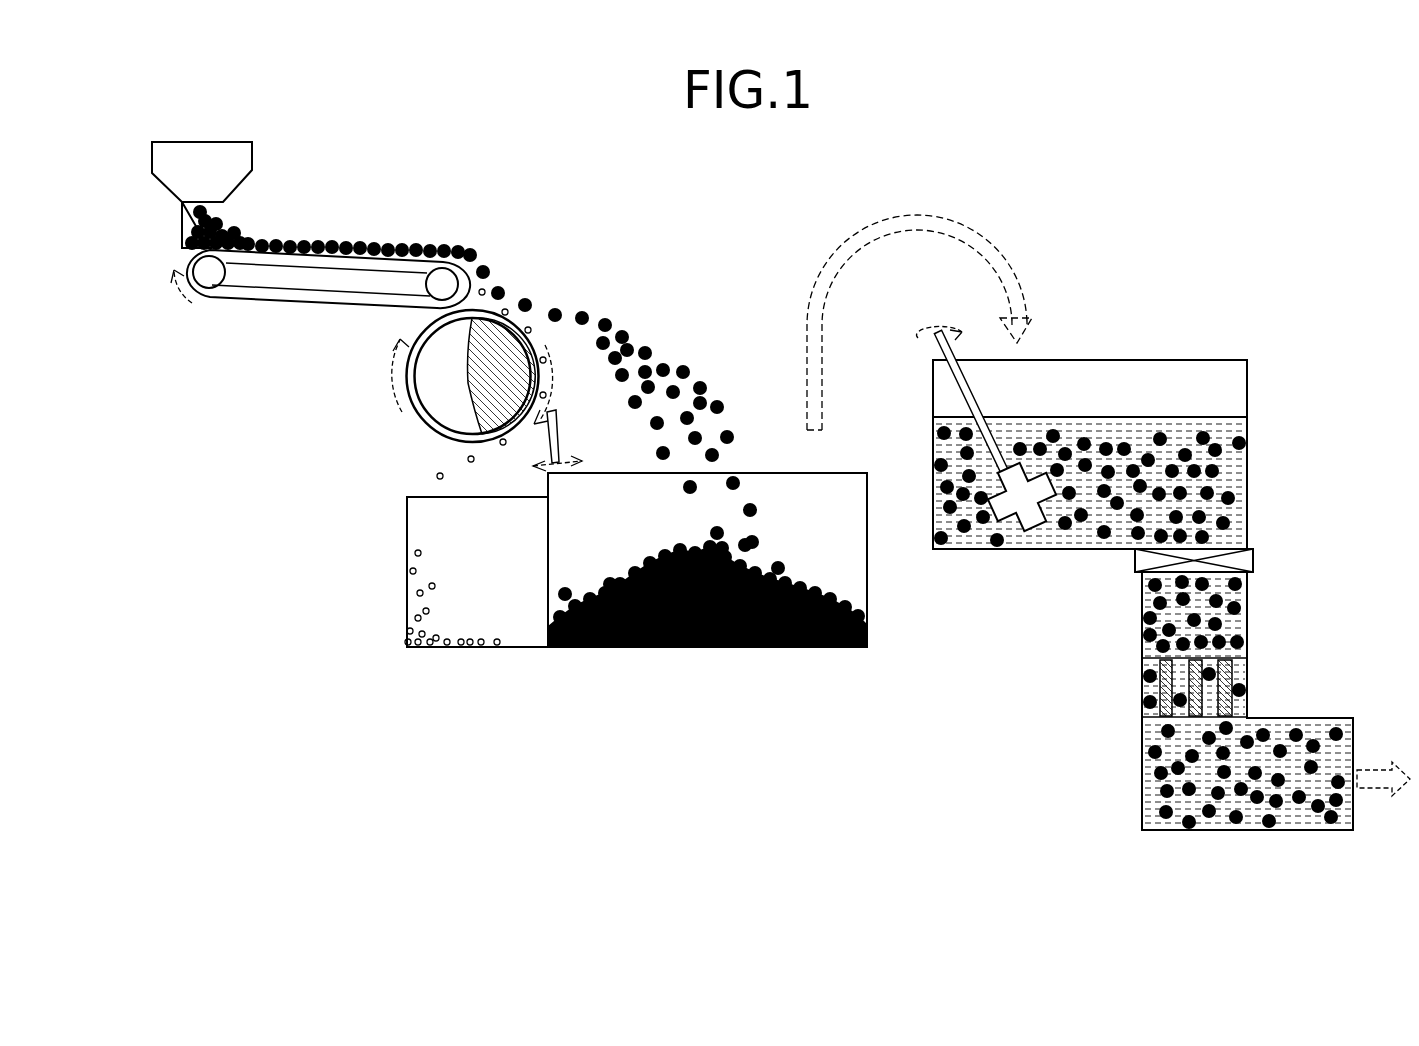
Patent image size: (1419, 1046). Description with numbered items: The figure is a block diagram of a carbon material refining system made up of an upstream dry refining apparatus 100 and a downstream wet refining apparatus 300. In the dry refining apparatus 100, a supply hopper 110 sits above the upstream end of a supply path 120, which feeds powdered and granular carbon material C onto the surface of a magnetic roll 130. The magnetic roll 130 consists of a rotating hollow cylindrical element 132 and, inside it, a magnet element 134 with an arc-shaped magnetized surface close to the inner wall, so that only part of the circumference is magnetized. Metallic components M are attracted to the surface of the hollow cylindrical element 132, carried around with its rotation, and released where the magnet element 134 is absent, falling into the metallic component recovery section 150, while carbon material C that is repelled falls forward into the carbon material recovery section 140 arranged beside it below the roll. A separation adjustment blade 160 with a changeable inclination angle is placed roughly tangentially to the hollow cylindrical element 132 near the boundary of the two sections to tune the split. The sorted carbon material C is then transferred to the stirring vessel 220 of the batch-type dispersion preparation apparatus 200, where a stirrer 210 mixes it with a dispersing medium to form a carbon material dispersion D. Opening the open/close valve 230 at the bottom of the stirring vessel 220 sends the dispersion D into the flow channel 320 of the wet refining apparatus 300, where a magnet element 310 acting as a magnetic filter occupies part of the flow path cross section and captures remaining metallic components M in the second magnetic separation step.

The dry refining apparatus 100 is at (342, 214).
The supply hopper 110 is at (178, 178).
The supply path 120 is at (310, 262).
The magnetic roll 130 is at (540, 338).
The rotating hollow cylindrical element 132 is at (414, 412).
The magnet element 134 is at (500, 400).
The carbon material recovery section 140 is at (623, 506).
The metallic component recovery section 150 is at (490, 537).
The separation adjustment blade 160 is at (555, 412).
The dispersion preparation apparatus 200 is at (1080, 402).
The stirrer 210 is at (1010, 500).
The stirring vessel 220 is at (1248, 406).
The open/close valve 230 is at (1250, 562).
The wet refining apparatus 300 is at (1142, 610).
The magnet element 310 is at (1143, 675).
The flow channel 320 is at (1228, 612).
The carbon material C is at (582, 318).
The metallic component M is at (506, 308).
The carbon material dispersion D is at (1100, 417).